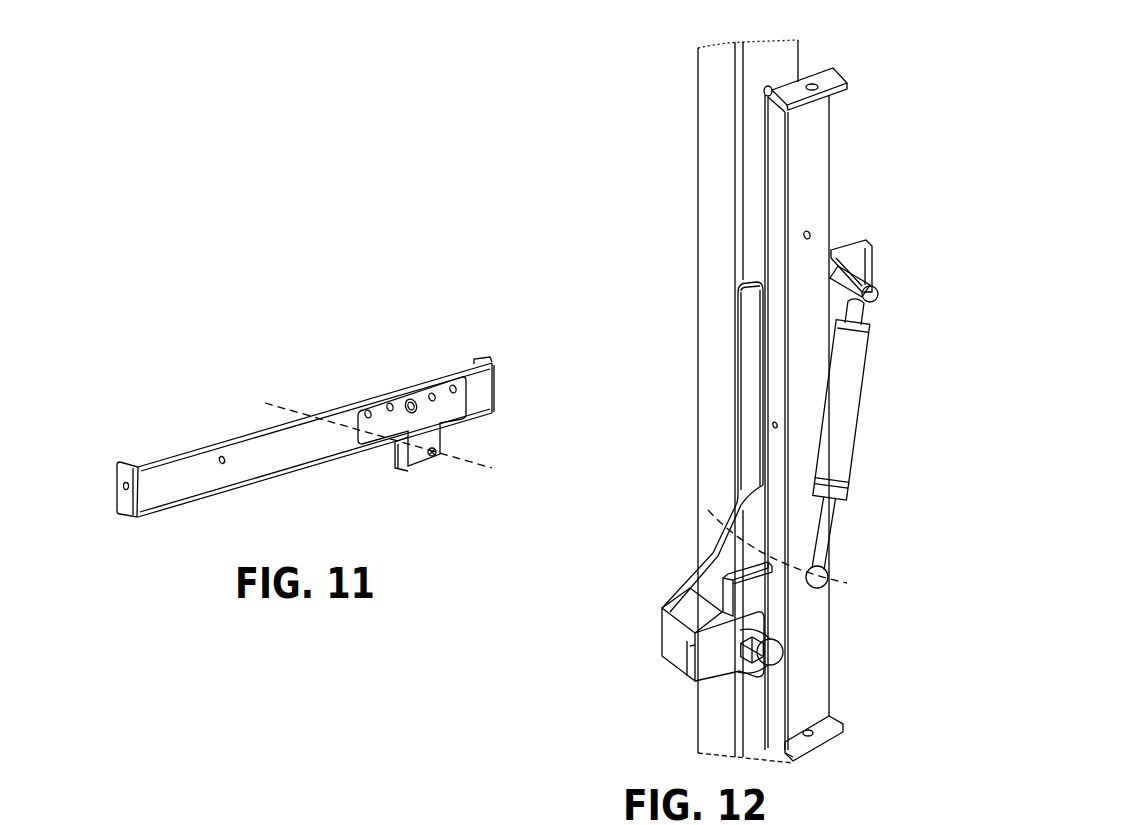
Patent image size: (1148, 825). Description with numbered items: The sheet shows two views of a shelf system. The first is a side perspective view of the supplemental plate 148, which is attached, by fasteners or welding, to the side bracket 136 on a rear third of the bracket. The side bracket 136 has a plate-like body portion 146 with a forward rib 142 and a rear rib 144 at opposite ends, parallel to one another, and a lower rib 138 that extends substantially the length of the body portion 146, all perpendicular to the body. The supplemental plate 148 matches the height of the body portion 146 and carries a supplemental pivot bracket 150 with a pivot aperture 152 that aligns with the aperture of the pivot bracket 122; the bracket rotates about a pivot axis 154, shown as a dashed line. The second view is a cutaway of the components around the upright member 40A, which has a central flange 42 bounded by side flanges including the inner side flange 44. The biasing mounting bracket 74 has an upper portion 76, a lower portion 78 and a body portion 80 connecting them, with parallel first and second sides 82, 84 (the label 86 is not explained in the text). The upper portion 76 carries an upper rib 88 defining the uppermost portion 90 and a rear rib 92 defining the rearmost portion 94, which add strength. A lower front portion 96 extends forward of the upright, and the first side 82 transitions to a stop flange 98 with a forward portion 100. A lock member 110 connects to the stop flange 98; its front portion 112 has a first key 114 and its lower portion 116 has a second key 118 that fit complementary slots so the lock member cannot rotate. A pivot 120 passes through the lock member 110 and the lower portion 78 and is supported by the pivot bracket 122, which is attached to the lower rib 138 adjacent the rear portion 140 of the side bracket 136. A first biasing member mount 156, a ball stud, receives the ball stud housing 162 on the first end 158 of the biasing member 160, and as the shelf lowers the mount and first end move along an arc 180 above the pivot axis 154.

In FIG. 11, the upright member 40A is at (428, 824).
In FIG. 12, the upright member 40A is at (710, 53).
In FIG. 12, the central flange 42 is at (712, 107).
In FIG. 12, the inner side flange 44 is at (788, 56).
In FIG. 12, the biasing mounting bracket 74 is at (751, 333).
In FIG. 12, the upper portion 76 is at (889, 233).
In FIG. 12, the lower portion 78 is at (688, 693).
In FIG. 12, the body portion 80 is at (752, 460).
In FIG. 12, the first side 82 is at (738, 300).
In FIG. 12, the second side 84 is at (745, 428).
In FIG. 12, the arm side wall 86 is at (736, 393).
In FIG. 12, the upper rib 88 is at (834, 248).
In FIG. 12, the uppermost portion 90 is at (870, 241).
In FIG. 12, the rear rib 92 is at (870, 268).
In FIG. 12, the rearmost portion 94 is at (874, 250).
In FIG. 12, the lower front portion 96 is at (652, 648).
In FIG. 12, the stop flange 98 is at (668, 658).
In FIG. 12, the forward portion 100 is at (662, 656).
In FIG. 12, the lock member 110 is at (743, 657).
In FIG. 12, the front portion 112 is at (705, 684).
In FIG. 12, the first key 114 is at (680, 660).
In FIG. 12, the lower portion 116 is at (732, 650).
In FIG. 12, the second key 118 is at (748, 676).
In FIG. 12, the pivot 120 is at (776, 641).
In FIG. 12, the pivot bracket 122 is at (753, 602).
In FIG. 11, the side bracket 136 is at (252, 450).
In FIG. 12, the side bracket 136 is at (820, 124).
In FIG. 11, the lower rib 138 is at (236, 490).
In FIG. 12, the lower rib 138 is at (767, 228).
In FIG. 11, the rear portion 140 is at (424, 362).
In FIG. 12, the rear portion 140 is at (762, 678).
In FIG. 11, the forward rib 142 is at (117, 490).
In FIG. 11, the rear rib 144 is at (479, 359).
In FIG. 12, the rear rib 144 is at (837, 726).
In FIG. 11, the body portion 146 is at (333, 402).
In FIG. 11, the supplemental plate 148 is at (397, 395).
In FIG. 11, the supplemental pivot bracket 150 is at (437, 432).
In FIG. 11, the pivot aperture 152 is at (432, 456).
In FIG. 11, the pivot axis 154 is at (492, 462).
In FIG. 12, the first biasing member mount 156 is at (874, 287).
In FIG. 12, the first end 158 is at (883, 443).
In FIG. 12, the biasing member 160 is at (851, 457).
In FIG. 12, the ball stud housing 162 is at (828, 572).
In FIG. 12, the arc 180 is at (713, 522).